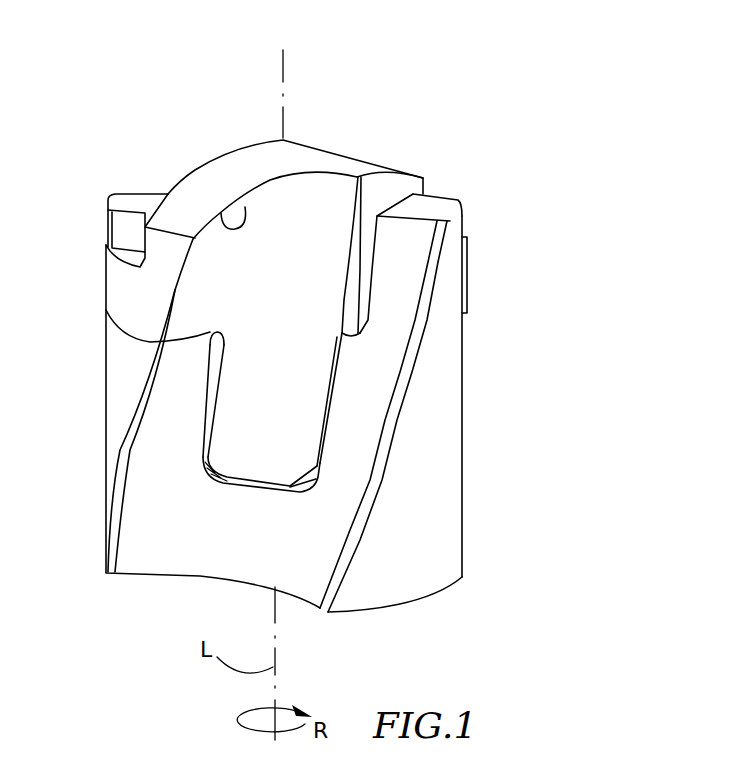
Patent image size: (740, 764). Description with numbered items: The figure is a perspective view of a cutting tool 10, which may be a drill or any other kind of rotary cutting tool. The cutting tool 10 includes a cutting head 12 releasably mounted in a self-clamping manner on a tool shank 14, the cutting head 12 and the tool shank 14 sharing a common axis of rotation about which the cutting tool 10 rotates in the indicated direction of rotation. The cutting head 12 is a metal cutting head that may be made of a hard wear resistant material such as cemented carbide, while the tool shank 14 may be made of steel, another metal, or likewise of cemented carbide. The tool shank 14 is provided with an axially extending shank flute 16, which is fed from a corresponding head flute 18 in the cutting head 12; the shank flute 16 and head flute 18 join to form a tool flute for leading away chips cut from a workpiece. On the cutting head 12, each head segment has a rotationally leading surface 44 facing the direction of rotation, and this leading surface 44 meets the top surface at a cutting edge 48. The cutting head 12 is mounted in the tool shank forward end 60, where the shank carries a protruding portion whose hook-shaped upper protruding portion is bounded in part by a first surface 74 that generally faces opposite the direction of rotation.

The cutting tool 10 is at (466, 64).
The cutting head 12 is at (336, 116).
The tool shank 14 is at (484, 513).
The shank flute 16 is at (237, 517).
The head flute 18 is at (247, 380).
The rotationally leading surface 44 is at (193, 293).
The cutting edge 48 is at (245, 207).
The tool shank forward end 60 is at (508, 240).
The first surface 74 is at (407, 242).